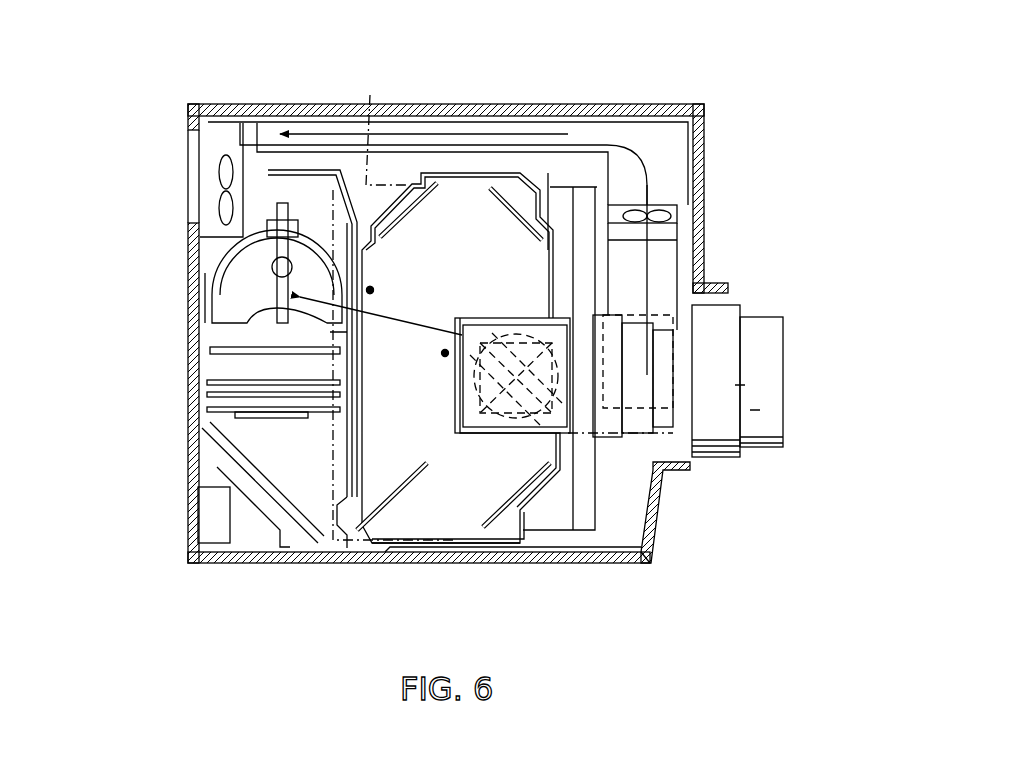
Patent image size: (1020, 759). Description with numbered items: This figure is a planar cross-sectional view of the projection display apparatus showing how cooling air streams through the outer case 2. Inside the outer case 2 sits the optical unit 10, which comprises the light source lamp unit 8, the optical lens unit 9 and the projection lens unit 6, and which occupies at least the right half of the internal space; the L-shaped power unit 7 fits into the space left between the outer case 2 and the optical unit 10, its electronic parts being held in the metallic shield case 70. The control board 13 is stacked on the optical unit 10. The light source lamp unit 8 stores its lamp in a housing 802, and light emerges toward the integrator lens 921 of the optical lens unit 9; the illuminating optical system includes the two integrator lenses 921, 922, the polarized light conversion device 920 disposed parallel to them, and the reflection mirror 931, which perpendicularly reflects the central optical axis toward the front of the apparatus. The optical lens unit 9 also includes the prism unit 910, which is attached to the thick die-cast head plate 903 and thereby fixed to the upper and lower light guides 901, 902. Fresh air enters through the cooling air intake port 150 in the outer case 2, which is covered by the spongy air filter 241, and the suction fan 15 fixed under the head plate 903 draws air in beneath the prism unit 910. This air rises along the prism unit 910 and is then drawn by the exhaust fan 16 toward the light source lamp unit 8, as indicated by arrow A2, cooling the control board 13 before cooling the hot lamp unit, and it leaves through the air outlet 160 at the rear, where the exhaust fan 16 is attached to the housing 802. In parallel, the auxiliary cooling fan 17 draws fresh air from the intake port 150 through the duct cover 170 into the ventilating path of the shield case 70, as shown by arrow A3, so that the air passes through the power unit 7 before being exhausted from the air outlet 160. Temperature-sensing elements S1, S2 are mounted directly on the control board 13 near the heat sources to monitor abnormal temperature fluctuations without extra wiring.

The outer case 2 is at (660, 505).
The projection lens unit 6 is at (775, 302).
The power unit 7 is at (660, 145).
The light source lamp unit 8 is at (222, 270).
The optical lens unit 9 is at (260, 522).
The optical unit 10 is at (395, 563).
The control board 13 is at (380, 85).
The suction fan 15 is at (490, 428).
The exhaust fan 16 is at (228, 165).
The auxiliary cooling fan 17 is at (680, 212).
The shield case 70 is at (688, 152).
The cooling air intake port 150 is at (723, 519).
The air outlet 160 is at (192, 170).
The duct cover 170 is at (705, 255).
The air filter 241 is at (660, 540).
The housing 802 is at (303, 165).
The upper light guide 901 is at (481, 583).
The lower light guide 902 is at (518, 543).
The head plate 903 is at (585, 508).
The prism unit 910 is at (510, 320).
The polarized light conversion device 920 is at (208, 400).
The integrator lens 921 is at (208, 350).
The integrator lens 922 is at (208, 382).
The reflection mirror 931 is at (268, 490).
The arrow A2 is at (420, 335).
The arrow A3 is at (565, 140).
The temperature-sensing element S1 is at (372, 289).
The temperature-sensing element S2 is at (445, 353).